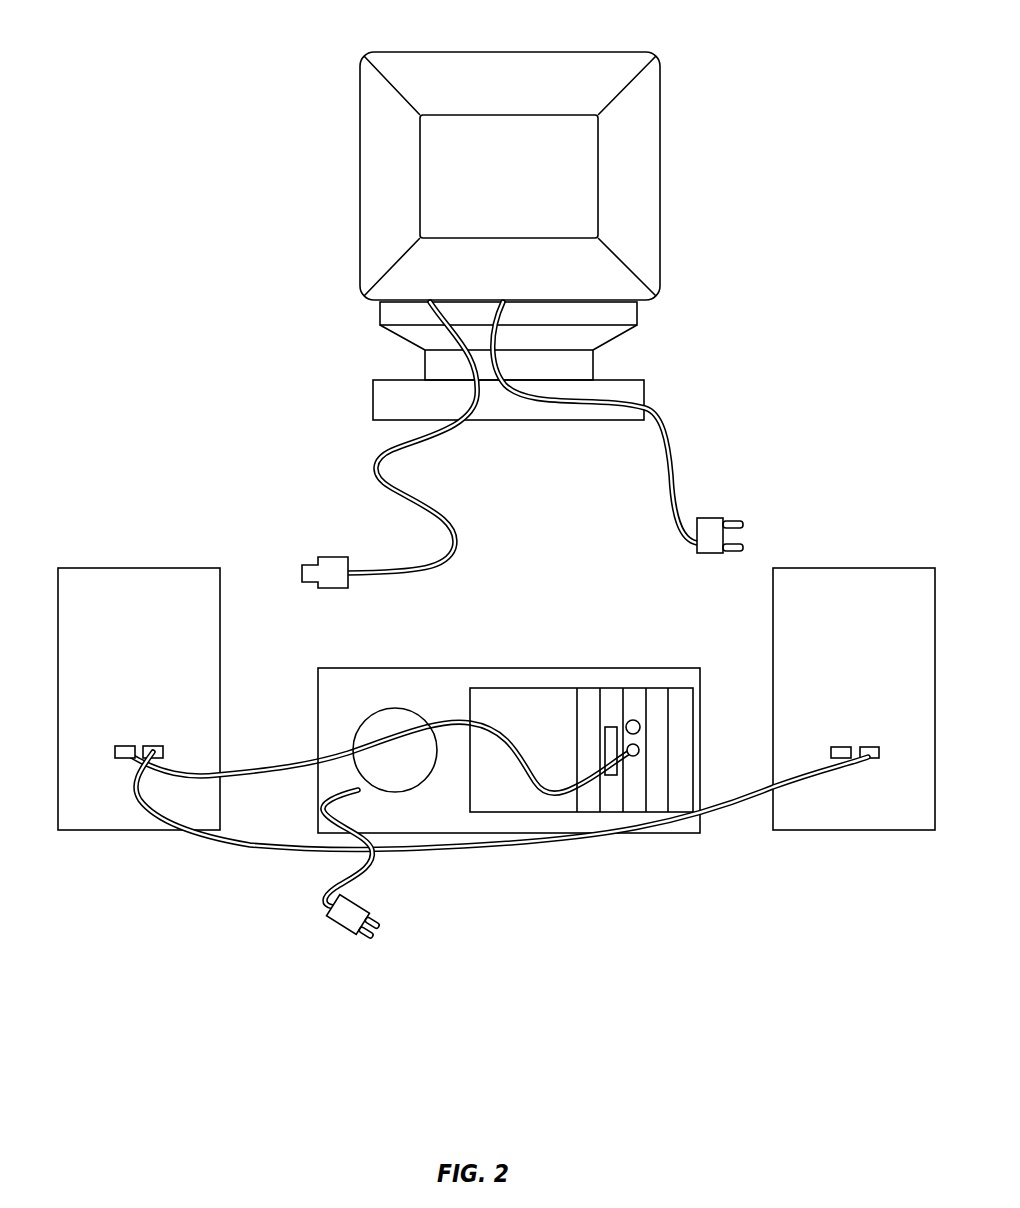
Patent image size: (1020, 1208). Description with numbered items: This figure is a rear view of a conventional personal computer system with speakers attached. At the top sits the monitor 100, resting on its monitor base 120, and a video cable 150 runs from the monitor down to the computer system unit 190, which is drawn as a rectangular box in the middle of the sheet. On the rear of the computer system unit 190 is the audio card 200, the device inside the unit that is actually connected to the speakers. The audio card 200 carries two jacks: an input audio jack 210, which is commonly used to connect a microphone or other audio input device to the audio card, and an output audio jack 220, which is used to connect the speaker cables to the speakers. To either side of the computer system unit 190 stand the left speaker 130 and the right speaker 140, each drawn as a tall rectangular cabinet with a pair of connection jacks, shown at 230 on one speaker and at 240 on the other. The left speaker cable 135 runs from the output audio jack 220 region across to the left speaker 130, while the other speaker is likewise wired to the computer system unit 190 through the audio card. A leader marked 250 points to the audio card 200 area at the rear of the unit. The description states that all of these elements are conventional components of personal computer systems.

The monitor 100 is at (465, 52).
The monitor base 120 is at (643, 380).
The video cable 150 is at (437, 512).
The computer system unit 190 is at (400, 668).
The audio card 200 is at (633, 687).
The input audio jack 210 is at (642, 723).
The output audio jack 220 is at (638, 748).
The sound card 250 is at (612, 687).
The right speaker 140 is at (100, 568).
The left speaker 130 is at (850, 568).
The left speaker cable 135 is at (763, 802).
The right speaker jacks 230 is at (875, 762).
The left speaker jacks 240 is at (127, 740).